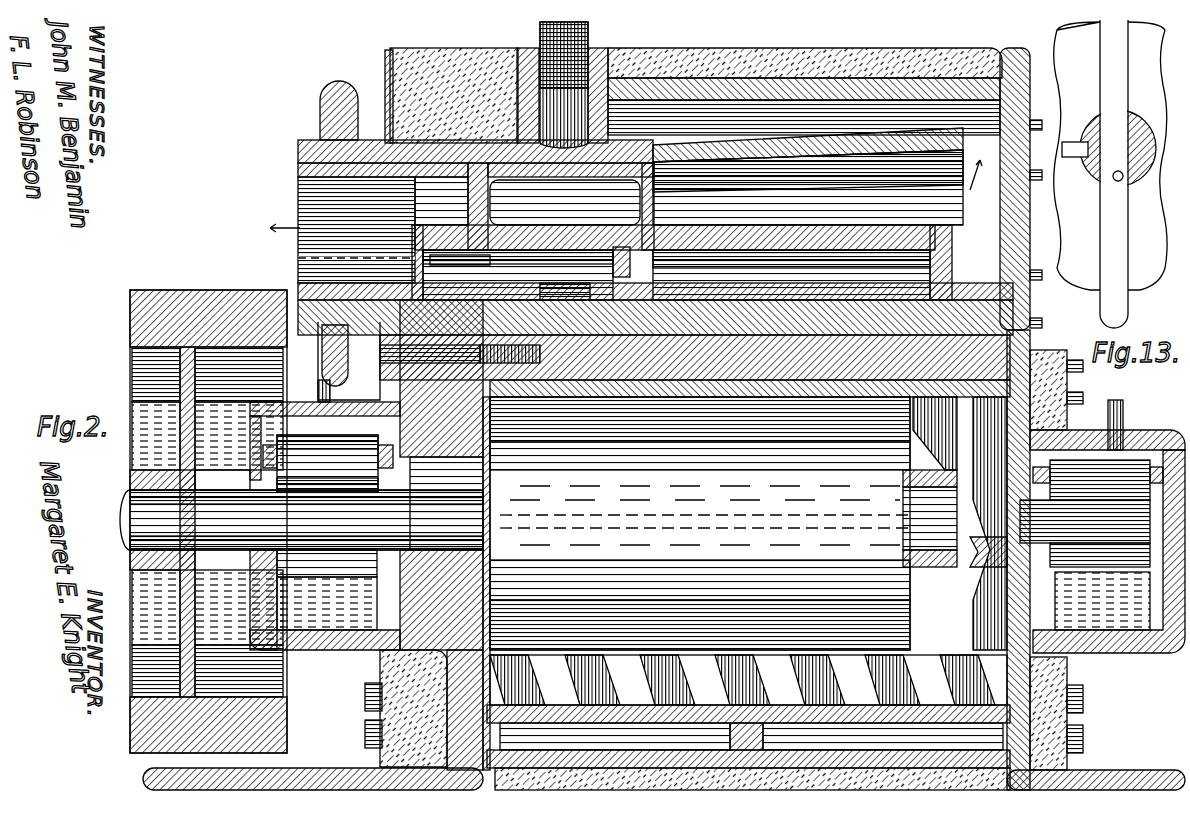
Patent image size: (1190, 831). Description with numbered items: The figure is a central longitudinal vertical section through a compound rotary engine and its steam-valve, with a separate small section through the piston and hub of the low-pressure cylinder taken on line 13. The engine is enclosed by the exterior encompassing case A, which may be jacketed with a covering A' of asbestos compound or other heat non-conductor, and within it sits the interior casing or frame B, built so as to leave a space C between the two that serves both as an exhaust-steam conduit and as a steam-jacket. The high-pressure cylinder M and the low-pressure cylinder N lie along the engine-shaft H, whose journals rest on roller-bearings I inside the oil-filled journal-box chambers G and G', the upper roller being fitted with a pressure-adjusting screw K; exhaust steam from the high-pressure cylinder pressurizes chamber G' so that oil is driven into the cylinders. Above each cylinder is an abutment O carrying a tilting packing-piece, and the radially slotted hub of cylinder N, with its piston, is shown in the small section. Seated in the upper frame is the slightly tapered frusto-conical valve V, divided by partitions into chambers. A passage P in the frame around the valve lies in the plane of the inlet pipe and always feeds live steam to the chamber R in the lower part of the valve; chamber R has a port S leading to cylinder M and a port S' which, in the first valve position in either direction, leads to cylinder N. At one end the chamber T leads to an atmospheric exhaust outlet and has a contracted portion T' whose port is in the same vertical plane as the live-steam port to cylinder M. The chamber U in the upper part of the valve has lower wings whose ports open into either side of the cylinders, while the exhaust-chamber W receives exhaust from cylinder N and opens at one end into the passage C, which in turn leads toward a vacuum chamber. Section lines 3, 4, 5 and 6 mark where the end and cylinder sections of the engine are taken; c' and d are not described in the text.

In FIG. 2, the section line 4 4 is at (443, 48).
In FIG. 2, the section line 6 6 is at (558, 8).
In FIG. 2, the covering A' is at (693, 82).
In FIG. 2, the exterior encompassing case A is at (797, 417).
In FIG. 2, the space C is at (690, 118).
In FIG. 2, the section line 5 5 is at (792, 48).
In FIG. 2, the interior casing B is at (850, 128).
In FIG. 13, the plate N' is at (1099, 156).
In FIG. 2, the engine-shaft H is at (128, 522).
In FIG. 13, the engine-shaft H is at (1109, 168).
In FIG. 2, the abutment O is at (1022, 348).
In FIG. 2, the section line 3 3 is at (1116, 380).
In FIG. 2, the contracted portion T' is at (393, 206).
In FIG. 2, the exhaust-chamber T is at (342, 230).
In FIG. 2, the chamber U is at (571, 206).
In FIG. 2, the exhaust-chamber W is at (817, 187).
In FIG. 2, the port S is at (460, 273).
In FIG. 2, the chamber R is at (671, 262).
In FIG. 2, the passage P is at (556, 290).
In FIG. 2, the port S' is at (683, 262).
In FIG. 2, the valve V is at (300, 292).
In FIG. 2, the roller-bearings I is at (296, 445).
In FIG. 2, the pressure-adjusting screw K is at (728, 386).
In FIG. 2, the journal-box chamber G is at (325, 539).
In FIG. 2, the high-pressure cylinder M is at (372, 662).
In FIG. 2, the low-pressure cylinder N is at (695, 577).
In FIG. 2, the section line 13 13 is at (1012, 820).
In FIG. 2, the armature hub c' is at (723, 523).
In FIG. 2, the nut d is at (985, 548).
In FIG. 2, the journal-box chamber G' is at (1096, 610).